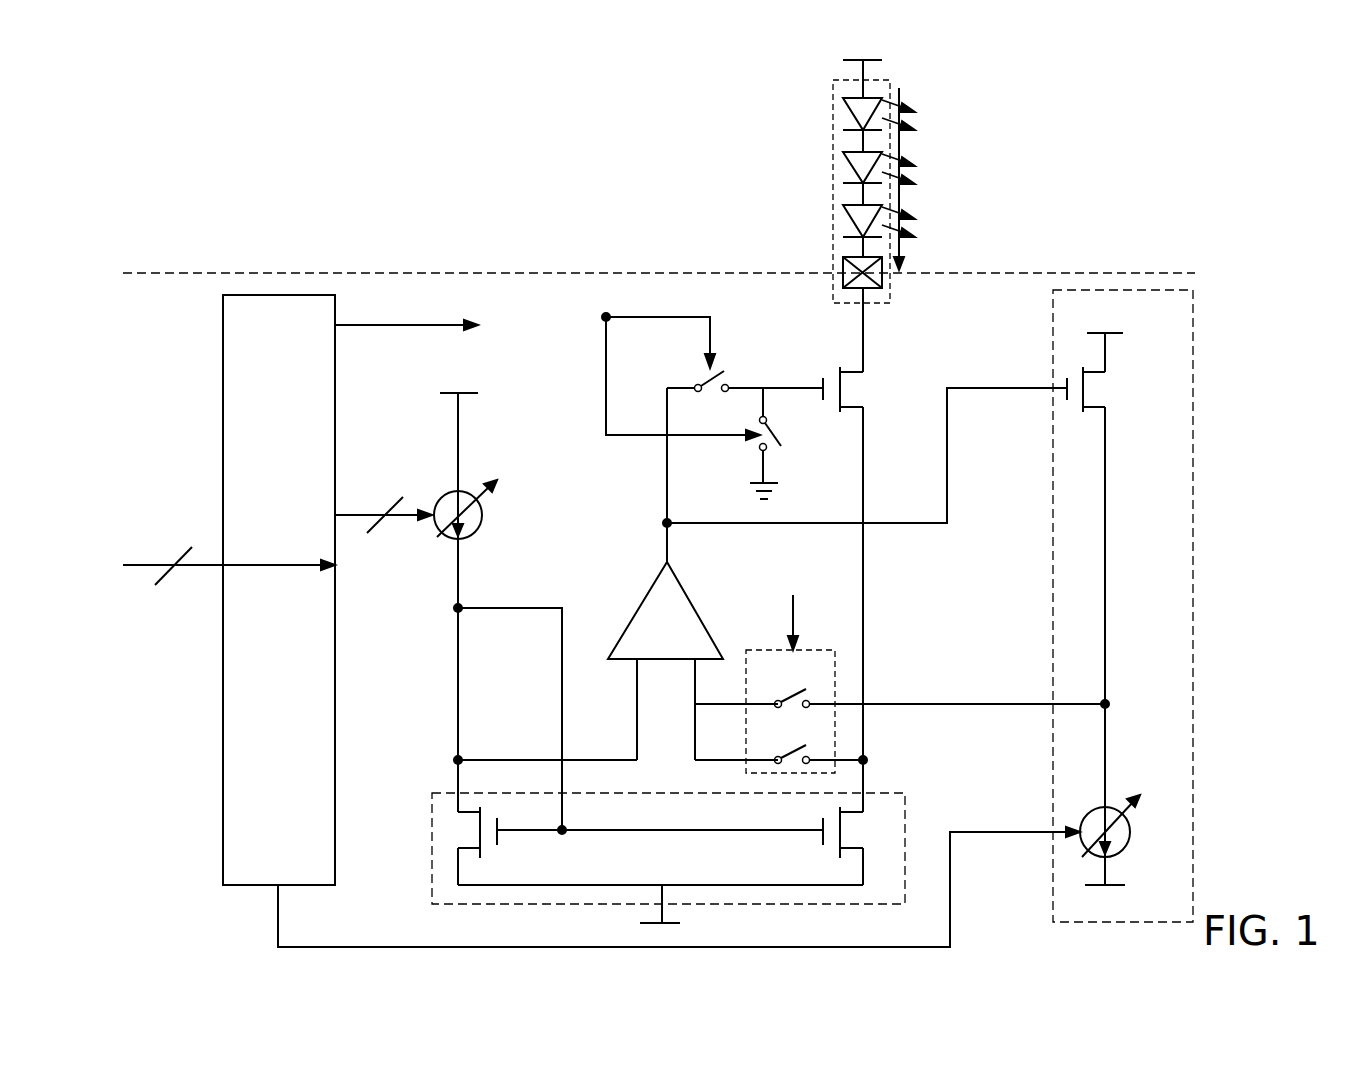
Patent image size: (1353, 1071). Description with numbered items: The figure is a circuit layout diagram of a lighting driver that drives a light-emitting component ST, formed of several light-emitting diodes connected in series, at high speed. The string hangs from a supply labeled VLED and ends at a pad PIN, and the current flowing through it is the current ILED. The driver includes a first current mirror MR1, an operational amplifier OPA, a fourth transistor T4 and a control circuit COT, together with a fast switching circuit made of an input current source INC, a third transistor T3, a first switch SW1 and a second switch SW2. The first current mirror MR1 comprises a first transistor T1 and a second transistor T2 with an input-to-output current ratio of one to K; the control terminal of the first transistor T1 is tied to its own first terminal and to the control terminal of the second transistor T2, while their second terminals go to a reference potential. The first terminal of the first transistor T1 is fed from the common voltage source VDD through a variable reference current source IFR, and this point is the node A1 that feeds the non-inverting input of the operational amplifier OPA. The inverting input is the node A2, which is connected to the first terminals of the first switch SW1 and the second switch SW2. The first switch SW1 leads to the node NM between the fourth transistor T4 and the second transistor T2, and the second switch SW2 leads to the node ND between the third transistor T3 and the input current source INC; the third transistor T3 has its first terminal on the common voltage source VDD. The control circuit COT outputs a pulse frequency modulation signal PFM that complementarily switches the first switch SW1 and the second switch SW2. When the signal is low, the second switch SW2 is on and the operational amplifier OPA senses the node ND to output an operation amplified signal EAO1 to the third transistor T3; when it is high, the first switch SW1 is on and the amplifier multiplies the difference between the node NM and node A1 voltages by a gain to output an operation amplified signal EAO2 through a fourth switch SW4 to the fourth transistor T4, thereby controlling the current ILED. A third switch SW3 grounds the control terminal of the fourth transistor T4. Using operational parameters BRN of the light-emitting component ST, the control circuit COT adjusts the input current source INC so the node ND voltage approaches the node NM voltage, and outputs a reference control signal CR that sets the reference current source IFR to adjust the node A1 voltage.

The light-emitting component ST is at (832, 190).
The pin PIN is at (843, 280).
The LED voltage VLED is at (859, 43).
The current of the light-emitting component ILED is at (935, 179).
The control circuit COT is at (223, 383).
The pulse frequency modulation signal PFM is at (578, 468).
The operational parameters BRN is at (229, 549).
The reference control signal CR is at (383, 499).
The common voltage source VDD is at (779, 347).
The reference current source IFR is at (481, 602).
The node A1 is at (528, 719).
The node A2 is at (717, 740).
The operational amplifier OPA is at (688, 582).
The first switch SW1 is at (814, 740).
The second switch SW2 is at (925, 711).
The third switch SW3 is at (796, 443).
The fourth switch SW4 is at (745, 397).
The operation amplified signal EAO1 is at (1000, 371).
The operation amplified signal EAO2 is at (775, 371).
The first transistor T1 is at (466, 846).
The second transistor T2 is at (859, 846).
The third transistor T3 is at (1123, 606).
The fourth transistor T4 is at (860, 589).
The node ND is at (1127, 708).
The node NM is at (885, 761).
The input current source INC is at (729, 871).
The first current mirror MR1 is at (790, 905).